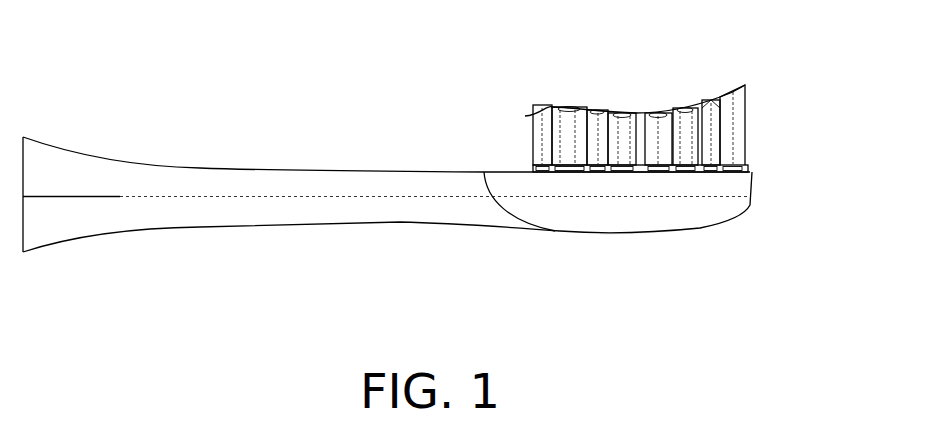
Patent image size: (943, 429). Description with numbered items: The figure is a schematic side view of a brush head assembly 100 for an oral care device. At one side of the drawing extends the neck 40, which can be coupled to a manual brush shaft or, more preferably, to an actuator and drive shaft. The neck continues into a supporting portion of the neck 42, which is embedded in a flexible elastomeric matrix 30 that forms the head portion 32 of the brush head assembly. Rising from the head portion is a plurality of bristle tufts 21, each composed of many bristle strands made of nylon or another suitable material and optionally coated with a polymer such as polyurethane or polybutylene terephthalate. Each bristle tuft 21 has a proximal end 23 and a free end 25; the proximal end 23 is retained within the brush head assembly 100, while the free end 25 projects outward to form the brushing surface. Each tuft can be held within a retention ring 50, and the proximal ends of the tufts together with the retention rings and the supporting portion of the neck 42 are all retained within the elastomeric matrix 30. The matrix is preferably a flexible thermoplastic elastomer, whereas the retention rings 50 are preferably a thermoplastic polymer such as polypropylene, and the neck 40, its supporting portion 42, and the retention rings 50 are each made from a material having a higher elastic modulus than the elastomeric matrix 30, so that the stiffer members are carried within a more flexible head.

The brush head assembly 100 is at (147, 74).
The neck 40 is at (264, 166).
The supporting portion of the neck 42 is at (560, 222).
The elastomeric matrix 30 is at (700, 187).
The head portion 32 is at (665, 252).
The retention ring 50 is at (745, 171).
The proximal end 23 is at (530, 168).
The bristle tufts 21 is at (533, 115).
The free end 25 is at (745, 102).